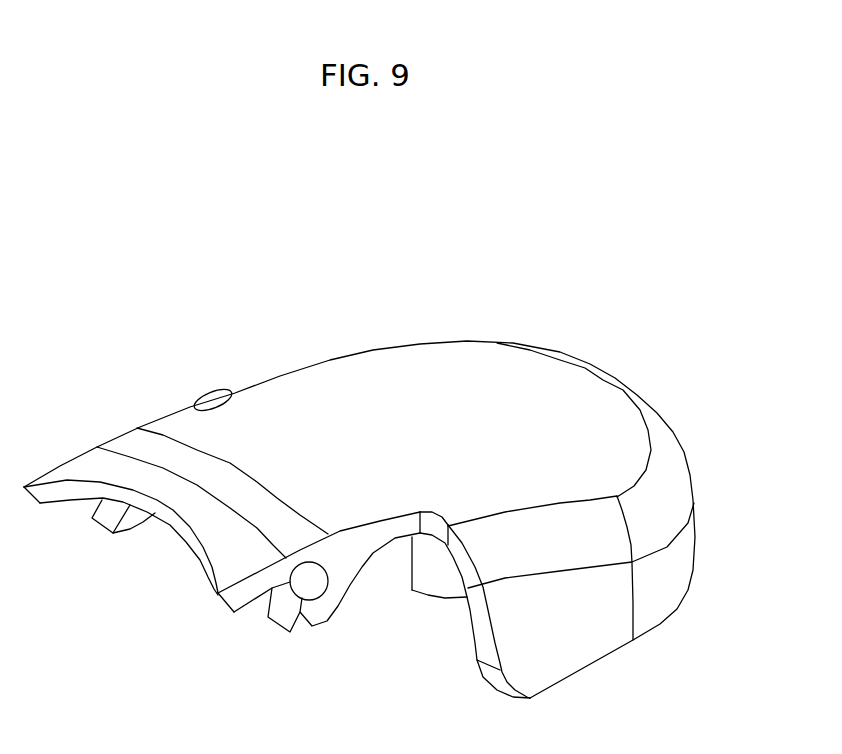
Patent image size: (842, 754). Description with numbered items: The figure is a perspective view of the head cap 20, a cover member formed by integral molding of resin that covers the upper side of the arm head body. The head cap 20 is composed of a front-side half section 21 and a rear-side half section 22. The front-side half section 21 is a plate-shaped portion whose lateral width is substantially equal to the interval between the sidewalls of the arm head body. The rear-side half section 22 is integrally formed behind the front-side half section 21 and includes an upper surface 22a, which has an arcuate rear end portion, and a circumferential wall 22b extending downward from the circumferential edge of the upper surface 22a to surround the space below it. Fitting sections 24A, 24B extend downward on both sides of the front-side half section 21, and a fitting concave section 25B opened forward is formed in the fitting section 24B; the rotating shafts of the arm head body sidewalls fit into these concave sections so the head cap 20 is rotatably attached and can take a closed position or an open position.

The head cap 20 is at (494, 290).
The front-side half section 21 is at (228, 447).
The rear-side half section 22 is at (515, 383).
The upper surface 22a is at (570, 433).
The circumferential wall 22b is at (663, 573).
The fitting section 24A is at (121, 534).
The fitting section 24B is at (336, 608).
The fitting concave section 25B is at (303, 583).